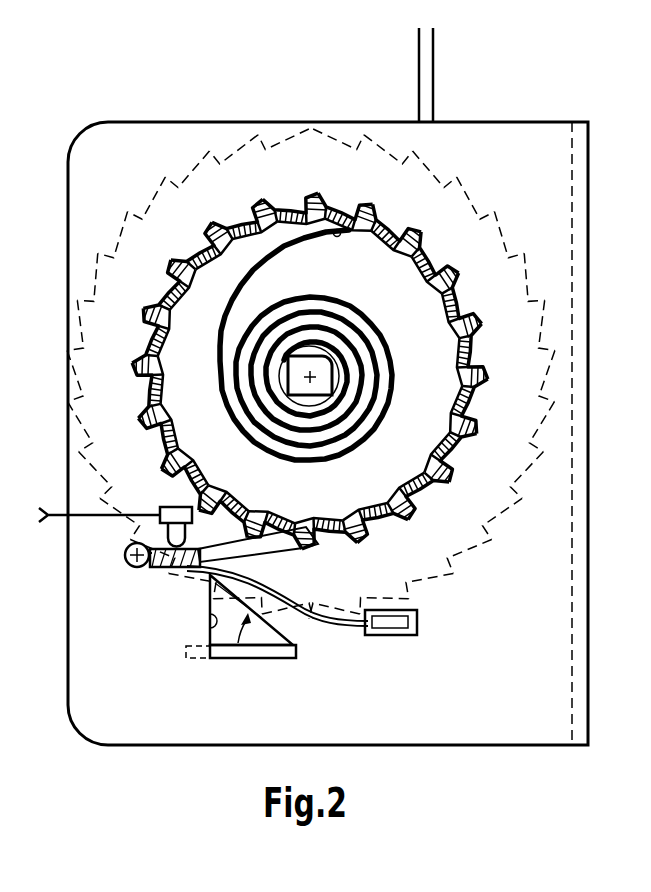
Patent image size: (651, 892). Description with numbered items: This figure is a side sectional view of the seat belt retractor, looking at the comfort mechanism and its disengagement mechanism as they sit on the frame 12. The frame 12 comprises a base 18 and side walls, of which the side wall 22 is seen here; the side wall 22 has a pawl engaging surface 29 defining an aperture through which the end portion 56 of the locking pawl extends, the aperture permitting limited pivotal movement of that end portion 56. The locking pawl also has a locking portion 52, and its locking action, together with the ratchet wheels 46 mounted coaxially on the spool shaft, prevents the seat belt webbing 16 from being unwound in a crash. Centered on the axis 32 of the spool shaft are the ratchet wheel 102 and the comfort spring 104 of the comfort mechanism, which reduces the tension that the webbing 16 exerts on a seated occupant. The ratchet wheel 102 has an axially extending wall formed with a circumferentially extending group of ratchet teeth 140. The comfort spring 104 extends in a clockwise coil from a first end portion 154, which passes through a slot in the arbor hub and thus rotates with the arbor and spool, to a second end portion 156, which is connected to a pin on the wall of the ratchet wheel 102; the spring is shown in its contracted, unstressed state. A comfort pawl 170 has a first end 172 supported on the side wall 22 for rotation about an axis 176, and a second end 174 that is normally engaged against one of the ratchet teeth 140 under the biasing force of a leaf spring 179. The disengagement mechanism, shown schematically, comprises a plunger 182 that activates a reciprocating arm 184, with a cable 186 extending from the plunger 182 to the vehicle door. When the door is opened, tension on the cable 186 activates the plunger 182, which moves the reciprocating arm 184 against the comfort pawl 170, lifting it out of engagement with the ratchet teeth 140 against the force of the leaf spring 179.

The frame 12 is at (321, 358).
The seat belt webbing 16 is at (418, 62).
The base 18 is at (590, 160).
The side wall 22 is at (487, 142).
The pawl engaging surface 29 is at (208, 628).
The axis 32 is at (305, 378).
The ratchet wheels 46 is at (233, 152).
The locking portion 52 is at (195, 660).
The end portion 56 is at (260, 658).
The ratchet wheel 102 is at (303, 314).
The comfort spring 104 is at (214, 333).
The ratchet teeth 140 is at (364, 224).
The first end portion 154 is at (321, 394).
The second end portion 156 is at (276, 252).
The comfort pawl 170 is at (187, 570).
The first end 172 is at (125, 560).
The second end 174 is at (322, 544).
The axis 176 is at (128, 567).
The leaf spring 179 is at (337, 632).
The plunger 182 is at (168, 508).
The reciprocating arm 184 is at (125, 518).
The cable 186 is at (74, 515).